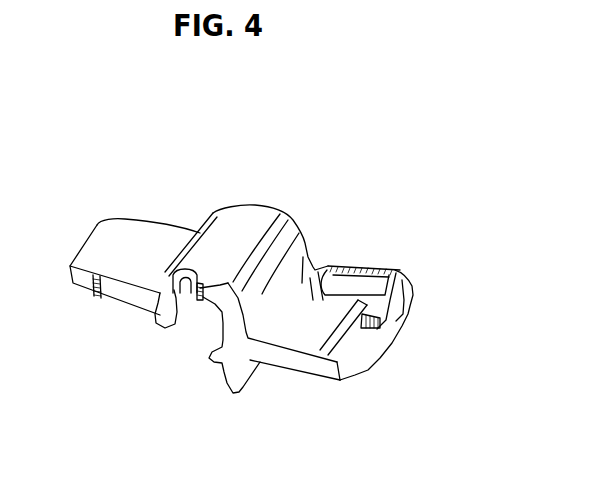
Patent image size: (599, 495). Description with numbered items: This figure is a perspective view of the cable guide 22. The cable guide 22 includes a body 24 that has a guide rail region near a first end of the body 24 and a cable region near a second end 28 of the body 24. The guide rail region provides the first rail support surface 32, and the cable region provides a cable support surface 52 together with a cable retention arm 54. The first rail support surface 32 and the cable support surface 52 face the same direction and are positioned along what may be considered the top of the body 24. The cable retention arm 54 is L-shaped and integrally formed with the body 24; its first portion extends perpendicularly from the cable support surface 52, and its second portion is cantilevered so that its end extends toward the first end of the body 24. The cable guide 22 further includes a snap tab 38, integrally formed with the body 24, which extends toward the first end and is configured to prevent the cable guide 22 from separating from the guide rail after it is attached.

The cable guide 22 is at (126, 125).
The first rail support surface 32 is at (118, 242).
The cable support surface 52 is at (328, 268).
The cable retention arm 54 is at (400, 269).
The second end 28 is at (410, 316).
The body 24 is at (158, 302).
The snap tab 38 is at (212, 364).